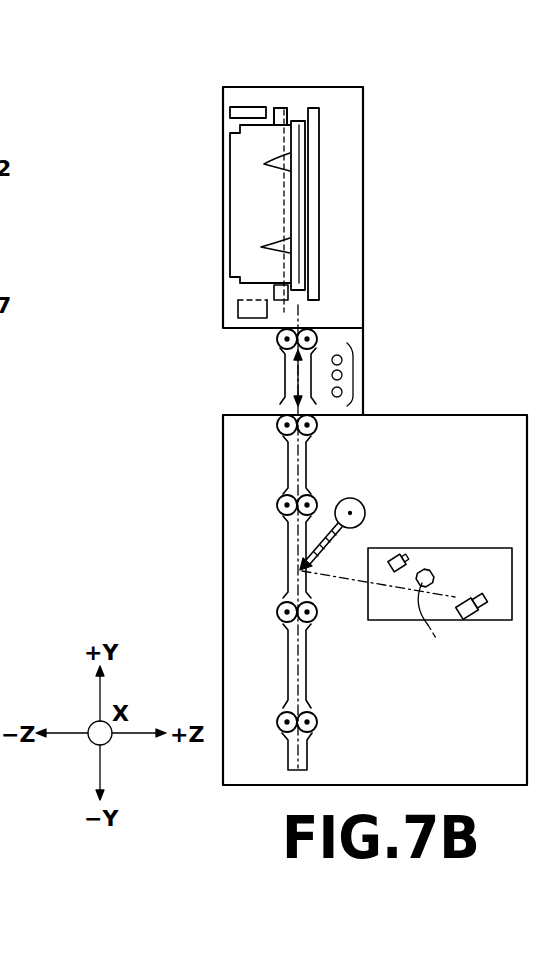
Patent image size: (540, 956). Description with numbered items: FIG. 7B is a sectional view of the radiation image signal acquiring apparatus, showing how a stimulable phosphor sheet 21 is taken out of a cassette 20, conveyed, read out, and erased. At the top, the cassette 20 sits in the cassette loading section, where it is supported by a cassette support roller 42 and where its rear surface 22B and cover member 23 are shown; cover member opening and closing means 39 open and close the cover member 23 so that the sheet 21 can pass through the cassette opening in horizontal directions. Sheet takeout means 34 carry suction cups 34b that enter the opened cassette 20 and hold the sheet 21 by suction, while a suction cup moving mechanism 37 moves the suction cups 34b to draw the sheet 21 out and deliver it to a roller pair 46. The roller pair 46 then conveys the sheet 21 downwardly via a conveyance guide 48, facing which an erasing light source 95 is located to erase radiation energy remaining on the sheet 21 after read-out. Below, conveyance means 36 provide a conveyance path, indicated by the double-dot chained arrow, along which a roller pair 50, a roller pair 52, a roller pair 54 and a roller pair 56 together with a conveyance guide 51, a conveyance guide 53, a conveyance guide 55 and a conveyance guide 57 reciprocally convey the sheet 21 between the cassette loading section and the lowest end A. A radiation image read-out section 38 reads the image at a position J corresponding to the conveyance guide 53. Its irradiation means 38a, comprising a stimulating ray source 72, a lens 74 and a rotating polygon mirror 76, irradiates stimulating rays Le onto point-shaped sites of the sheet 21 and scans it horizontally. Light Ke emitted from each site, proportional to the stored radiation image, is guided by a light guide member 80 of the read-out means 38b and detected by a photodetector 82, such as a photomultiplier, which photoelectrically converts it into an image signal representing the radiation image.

The cassette 20 is at (296, 108).
The stimulable phosphor sheet 21 is at (290, 208).
The rear surface 22B is at (312, 210).
The cover member 23 is at (254, 143).
The sheet takeout means 34 is at (232, 289).
The suction cups 34b is at (264, 165).
The conveyance means 36 is at (266, 574).
The suction cup moving mechanism 37 is at (238, 303).
The radiation image read-out section 38 is at (463, 478).
The irradiation means 38a is at (409, 538).
The read-out means 38b is at (360, 494).
The cover member opening and closing means 39 is at (243, 110).
The cassette support roller 42 is at (276, 108).
The roller pair 46 is at (280, 341).
The conveyance guide 48 is at (285, 374).
The roller pair 50 is at (318, 429).
The conveyance guide 51 is at (286, 466).
The roller pair 52 is at (279, 499).
The conveyance guide 53 is at (286, 568).
The roller pair 54 is at (279, 607).
The conveyance guide 55 is at (287, 672).
The roller pair 56 is at (278, 713).
The conveyance guide 57 is at (307, 755).
The stimulating ray source 72 is at (402, 560).
The lens 74 is at (433, 577).
The rotating polygon mirror 76 is at (468, 614).
The light guide member 80 is at (340, 543).
The photodetector 82 is at (354, 512).
The erasing light source 95 is at (352, 345).
The lowest end A is at (298, 772).
The position J is at (312, 584).
The emitted light Ke is at (298, 567).
The stimulating rays Le is at (434, 624).